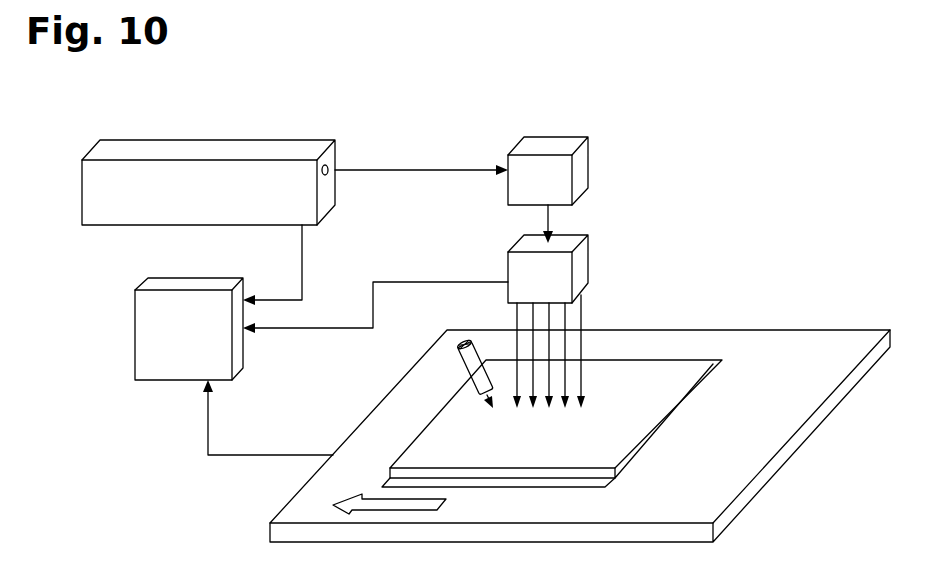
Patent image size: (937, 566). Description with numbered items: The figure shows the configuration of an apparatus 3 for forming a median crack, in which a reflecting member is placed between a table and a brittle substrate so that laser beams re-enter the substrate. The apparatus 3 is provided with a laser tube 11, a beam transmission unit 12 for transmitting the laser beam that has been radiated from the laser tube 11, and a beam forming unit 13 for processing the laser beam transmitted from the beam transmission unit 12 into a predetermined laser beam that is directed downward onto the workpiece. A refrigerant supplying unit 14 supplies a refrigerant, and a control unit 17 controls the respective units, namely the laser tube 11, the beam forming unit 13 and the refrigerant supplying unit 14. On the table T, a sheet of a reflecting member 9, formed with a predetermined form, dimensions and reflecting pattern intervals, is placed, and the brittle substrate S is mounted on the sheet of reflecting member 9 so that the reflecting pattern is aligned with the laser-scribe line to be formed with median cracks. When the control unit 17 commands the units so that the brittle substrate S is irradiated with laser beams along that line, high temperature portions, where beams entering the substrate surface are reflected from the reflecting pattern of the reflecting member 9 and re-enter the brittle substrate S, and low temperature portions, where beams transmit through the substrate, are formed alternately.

The apparatus for forming a median crack 3 is at (700, 118).
The laser tube 11 is at (222, 150).
The beam transmission unit 12 is at (558, 142).
The beam forming unit 13 is at (581, 265).
The refrigerant supplying unit 14 is at (470, 348).
The control unit 17 is at (172, 371).
The reflecting member 9 is at (716, 360).
The brittle substrate S is at (645, 375).
The table T is at (792, 328).